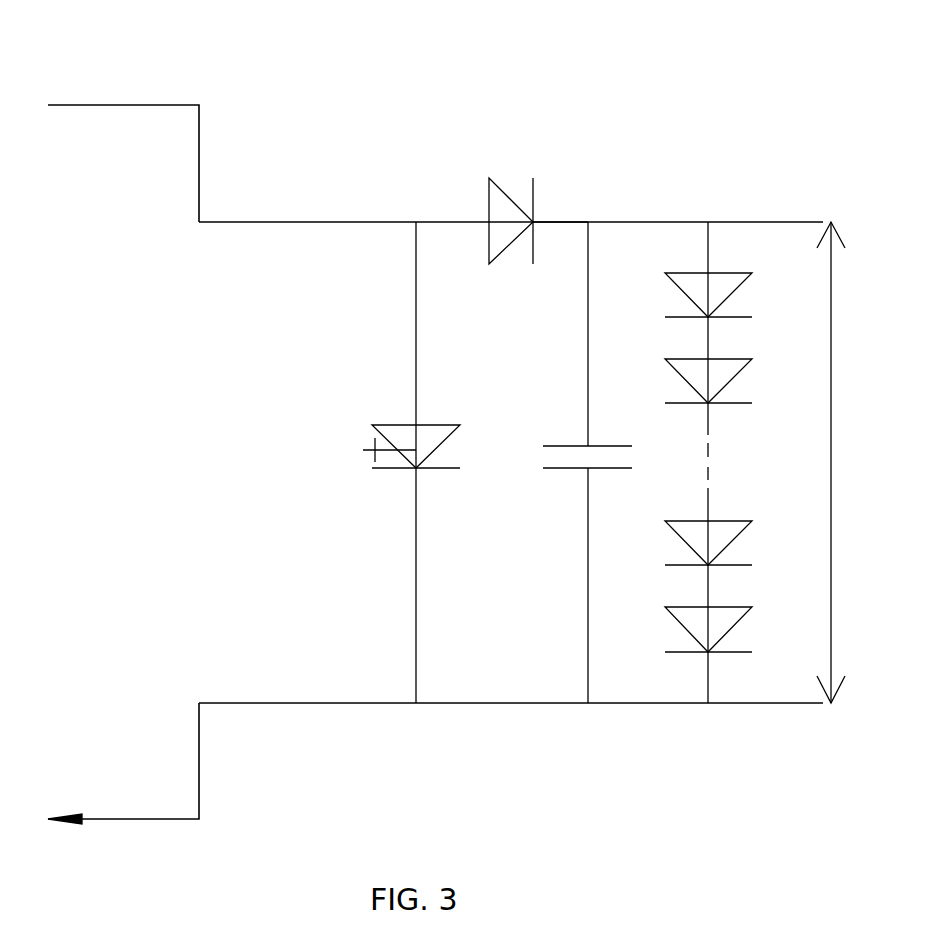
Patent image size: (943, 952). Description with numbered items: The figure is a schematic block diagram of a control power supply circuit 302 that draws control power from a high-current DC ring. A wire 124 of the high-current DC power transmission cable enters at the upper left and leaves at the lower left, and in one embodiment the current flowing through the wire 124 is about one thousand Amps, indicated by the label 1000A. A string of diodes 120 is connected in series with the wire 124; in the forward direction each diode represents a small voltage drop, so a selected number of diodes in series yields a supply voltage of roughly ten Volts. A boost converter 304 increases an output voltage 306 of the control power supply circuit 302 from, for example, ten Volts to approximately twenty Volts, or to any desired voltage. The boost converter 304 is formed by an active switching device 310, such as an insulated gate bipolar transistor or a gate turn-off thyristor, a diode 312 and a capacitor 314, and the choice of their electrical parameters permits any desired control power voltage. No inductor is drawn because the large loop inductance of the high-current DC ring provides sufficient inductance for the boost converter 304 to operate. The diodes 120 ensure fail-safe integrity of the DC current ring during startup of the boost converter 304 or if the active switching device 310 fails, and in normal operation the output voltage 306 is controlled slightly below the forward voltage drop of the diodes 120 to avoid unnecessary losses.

The wire 124 is at (124, 104).
The current 1000A is at (234, 125).
The control power supply circuit 302 is at (380, 73).
The boost converter 304 is at (578, 160).
The diode 312 is at (500, 254).
The active switching device 310 is at (440, 425).
The capacitor 314 is at (613, 446).
The diodes 120 is at (766, 434).
The output voltage 306 is at (830, 462).